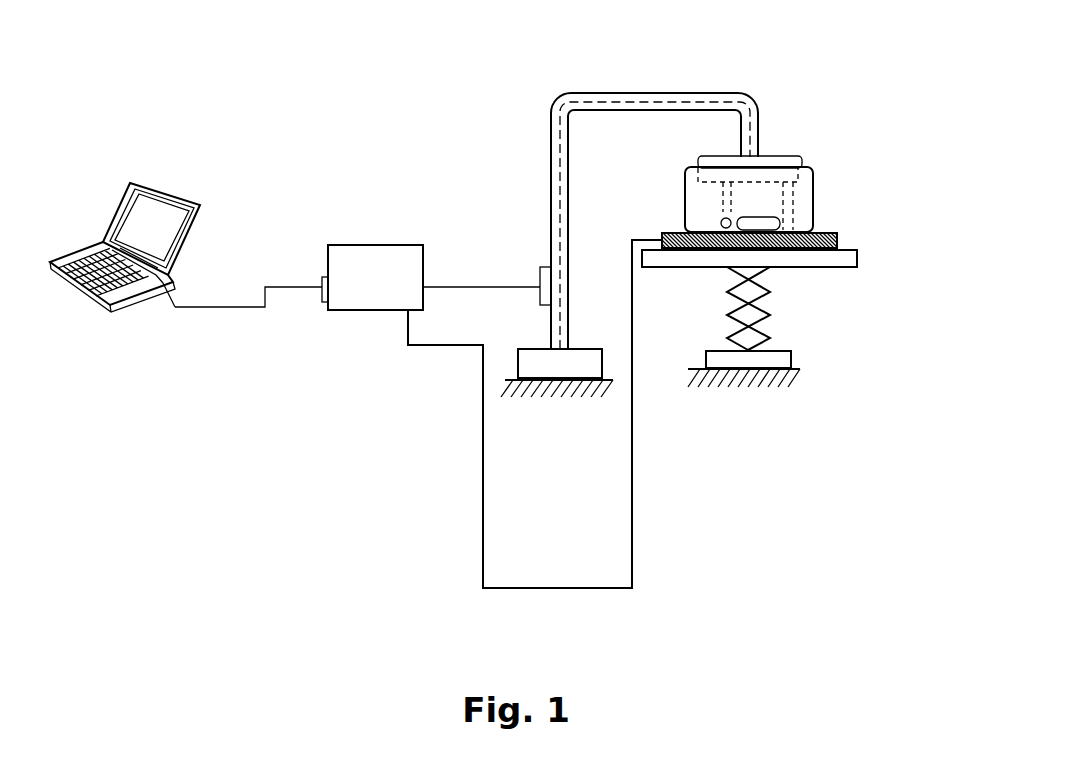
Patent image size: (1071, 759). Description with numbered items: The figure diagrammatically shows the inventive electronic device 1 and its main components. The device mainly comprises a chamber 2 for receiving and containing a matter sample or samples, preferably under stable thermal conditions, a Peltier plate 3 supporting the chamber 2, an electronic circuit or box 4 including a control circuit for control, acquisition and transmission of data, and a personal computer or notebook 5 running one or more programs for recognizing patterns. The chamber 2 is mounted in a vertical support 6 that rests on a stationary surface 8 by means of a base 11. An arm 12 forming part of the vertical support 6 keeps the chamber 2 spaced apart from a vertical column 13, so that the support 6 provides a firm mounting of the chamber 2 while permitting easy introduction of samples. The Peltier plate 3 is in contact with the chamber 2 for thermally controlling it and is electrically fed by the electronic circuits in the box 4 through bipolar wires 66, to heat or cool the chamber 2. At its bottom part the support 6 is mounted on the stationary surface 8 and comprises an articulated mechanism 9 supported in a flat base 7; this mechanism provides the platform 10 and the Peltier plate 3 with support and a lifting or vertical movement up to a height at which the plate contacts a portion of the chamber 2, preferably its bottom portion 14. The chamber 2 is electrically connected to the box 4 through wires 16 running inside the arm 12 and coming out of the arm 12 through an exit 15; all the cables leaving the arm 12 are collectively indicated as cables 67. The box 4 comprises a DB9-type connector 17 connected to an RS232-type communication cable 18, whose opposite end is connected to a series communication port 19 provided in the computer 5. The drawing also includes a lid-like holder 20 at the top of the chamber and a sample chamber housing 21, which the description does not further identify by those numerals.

The electronic device 1 is at (375, 450).
The chamber 2 is at (815, 129).
The Peltier plate 3 is at (837, 240).
The electronic circuit or box 4 is at (378, 256).
The personal computer or notebook 5 is at (130, 325).
The vertical support 6 is at (585, 186).
The flat base 7 is at (791, 357).
The stationary surface 8 is at (768, 387).
The articulated mechanism 9 is at (767, 292).
The platform 10 is at (830, 267).
The base 11 is at (530, 365).
The arm 12 is at (663, 92).
The vertical column 13 is at (567, 162).
The bottom portion 14 is at (838, 220).
The exit 15 is at (540, 270).
The wires 16 is at (567, 230).
The DB9-type connector 17 is at (318, 302).
The communication cable 18 is at (218, 310).
The series communication port 19 is at (163, 283).
The holder 20 is at (778, 156).
The sample chamber 21 is at (813, 192).
The bipolar wires 66 is at (633, 545).
The cables 67 is at (452, 287).